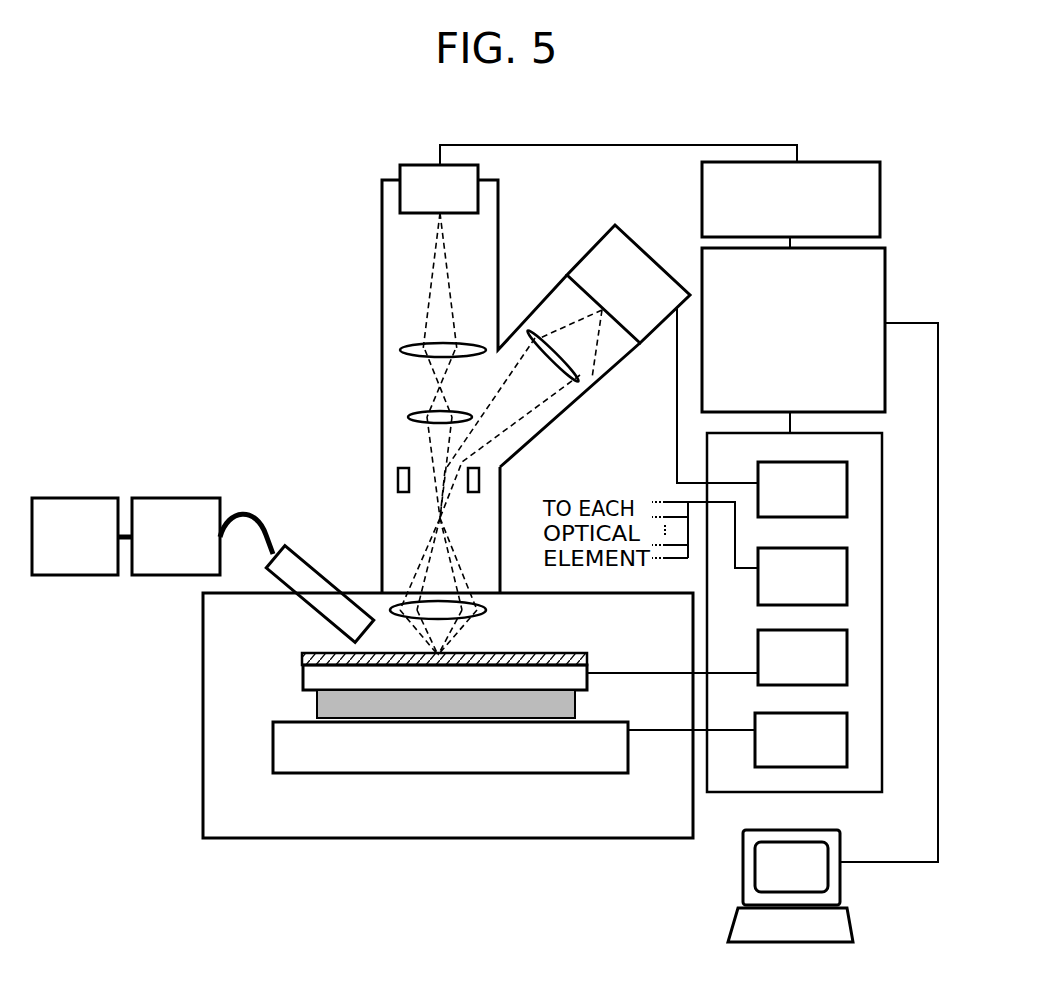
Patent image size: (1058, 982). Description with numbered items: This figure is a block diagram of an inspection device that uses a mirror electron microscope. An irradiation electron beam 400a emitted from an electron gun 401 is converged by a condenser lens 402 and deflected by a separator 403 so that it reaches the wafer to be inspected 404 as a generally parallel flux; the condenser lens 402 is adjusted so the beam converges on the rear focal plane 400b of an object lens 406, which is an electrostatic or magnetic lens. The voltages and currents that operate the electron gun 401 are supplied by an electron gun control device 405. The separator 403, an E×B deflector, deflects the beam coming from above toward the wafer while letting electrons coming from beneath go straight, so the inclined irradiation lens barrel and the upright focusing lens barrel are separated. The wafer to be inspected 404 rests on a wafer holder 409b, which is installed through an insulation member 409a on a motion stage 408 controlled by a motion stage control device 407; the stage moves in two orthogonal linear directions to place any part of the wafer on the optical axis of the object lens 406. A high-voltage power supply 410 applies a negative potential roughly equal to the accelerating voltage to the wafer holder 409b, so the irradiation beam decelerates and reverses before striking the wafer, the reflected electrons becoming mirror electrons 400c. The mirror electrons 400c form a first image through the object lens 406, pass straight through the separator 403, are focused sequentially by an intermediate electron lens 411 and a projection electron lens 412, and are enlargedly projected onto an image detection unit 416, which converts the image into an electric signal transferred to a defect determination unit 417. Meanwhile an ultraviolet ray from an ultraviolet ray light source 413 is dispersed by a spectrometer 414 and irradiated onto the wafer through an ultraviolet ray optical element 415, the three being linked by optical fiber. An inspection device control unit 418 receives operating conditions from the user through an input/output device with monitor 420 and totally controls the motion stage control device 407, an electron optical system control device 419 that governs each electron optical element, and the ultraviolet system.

The electron gun 401 is at (628, 284).
The condenser lens 402 is at (580, 386).
The separator 403 is at (479, 476).
The wafer to be inspected 404 is at (568, 652).
The electron gun control device 405 is at (802, 489).
The object lens 406 is at (463, 613).
The motion stage control device 407 is at (801, 740).
The motion stage 408 is at (532, 773).
The insulation member 409a is at (317, 712).
The wafer holder 409b is at (298, 675).
The high-voltage power supply 410 is at (802, 657).
The intermediate electron lens 411 is at (408, 417).
The projection electron lens 412 is at (400, 350).
The ultraviolet ray light source 413 is at (75, 536).
The spectrometer 414 is at (176, 536).
The ultraviolet ray optical element 415 is at (320, 594).
The image detection unit 416 is at (439, 189).
The defect determination unit 417 is at (791, 199).
The inspection device control unit 418 is at (793, 330).
The electron optical system control device 419 is at (802, 576).
The input/output device with monitor 420 is at (853, 902).
The irradiation electron beam 400a is at (600, 346).
The rear focal plane 400b is at (437, 520).
The mirror electrons 400c is at (403, 593).